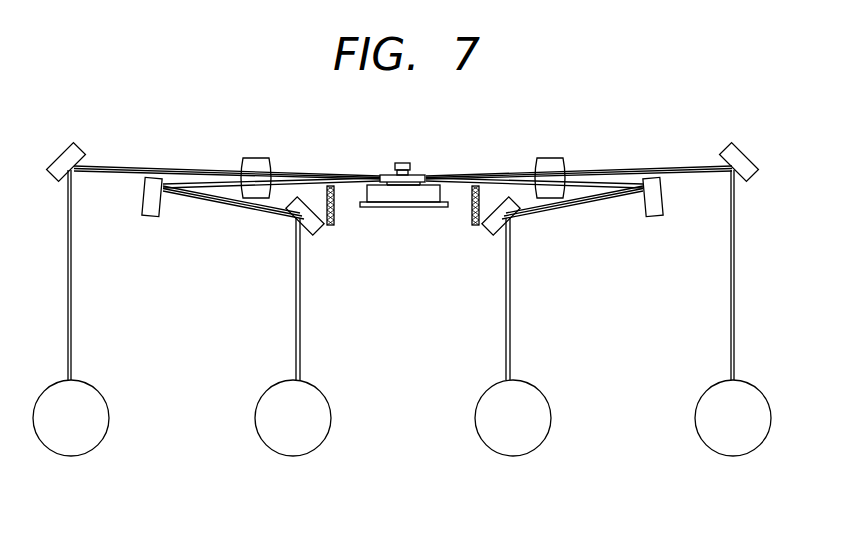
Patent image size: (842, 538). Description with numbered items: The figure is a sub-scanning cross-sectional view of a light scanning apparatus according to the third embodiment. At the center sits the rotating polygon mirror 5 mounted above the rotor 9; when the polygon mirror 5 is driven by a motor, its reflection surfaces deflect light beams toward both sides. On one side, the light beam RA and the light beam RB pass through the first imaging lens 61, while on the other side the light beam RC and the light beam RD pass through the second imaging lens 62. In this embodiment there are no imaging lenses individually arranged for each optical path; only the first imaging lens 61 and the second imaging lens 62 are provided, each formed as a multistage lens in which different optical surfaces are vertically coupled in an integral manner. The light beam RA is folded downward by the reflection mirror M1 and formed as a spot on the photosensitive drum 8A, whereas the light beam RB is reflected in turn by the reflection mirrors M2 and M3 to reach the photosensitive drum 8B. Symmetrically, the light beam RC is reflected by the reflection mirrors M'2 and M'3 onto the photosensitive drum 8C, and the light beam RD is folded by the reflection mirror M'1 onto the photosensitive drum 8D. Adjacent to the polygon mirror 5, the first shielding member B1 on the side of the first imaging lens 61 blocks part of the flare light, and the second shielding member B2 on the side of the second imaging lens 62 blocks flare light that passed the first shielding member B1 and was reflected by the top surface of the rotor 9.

The rotating polygon mirror 5 is at (387, 175).
The rotor 9 is at (405, 196).
The first imaging lens 61 is at (258, 158).
The second imaging lens 62 is at (548, 158).
The light beam RA is at (287, 170).
The light beam RB is at (286, 192).
The light beam RC is at (520, 193).
The light beam RD is at (473, 170).
The reflection mirror M1 is at (70, 148).
The reflection mirror M2 is at (150, 217).
The reflection mirror M3 is at (313, 230).
The reflection mirror M'1 is at (745, 141).
The reflection mirror M'2 is at (648, 226).
The reflection mirror M'3 is at (491, 253).
The first shielding member B1 is at (336, 212).
The second shielding member B2 is at (465, 212).
The photosensitive drum 8A is at (90, 382).
The photosensitive drum 8B is at (313, 382).
The photosensitive drum 8C is at (533, 382).
The photosensitive drum 8D is at (753, 382).